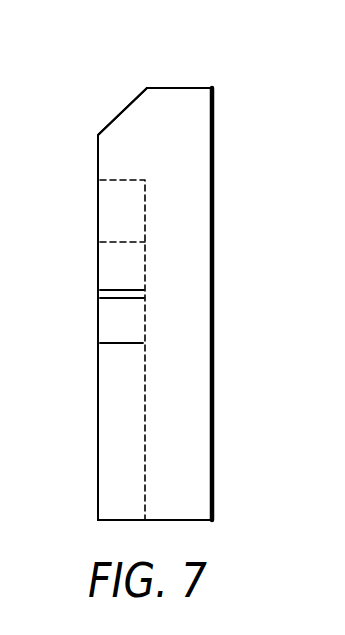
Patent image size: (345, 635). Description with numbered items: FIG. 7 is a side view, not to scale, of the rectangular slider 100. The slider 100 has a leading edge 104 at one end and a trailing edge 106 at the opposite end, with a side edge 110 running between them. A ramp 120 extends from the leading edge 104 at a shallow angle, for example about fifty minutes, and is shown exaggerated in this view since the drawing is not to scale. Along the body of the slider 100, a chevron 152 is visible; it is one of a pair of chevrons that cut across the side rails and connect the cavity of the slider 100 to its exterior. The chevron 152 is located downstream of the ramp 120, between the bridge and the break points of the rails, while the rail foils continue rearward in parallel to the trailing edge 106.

The slider 100 is at (104, 526).
The leading edge 104 is at (173, 88).
The trailing edge 106 is at (190, 525).
The side edge 110 is at (173, 164).
The ramp 120 is at (122, 112).
The chevron 152 is at (152, 282).